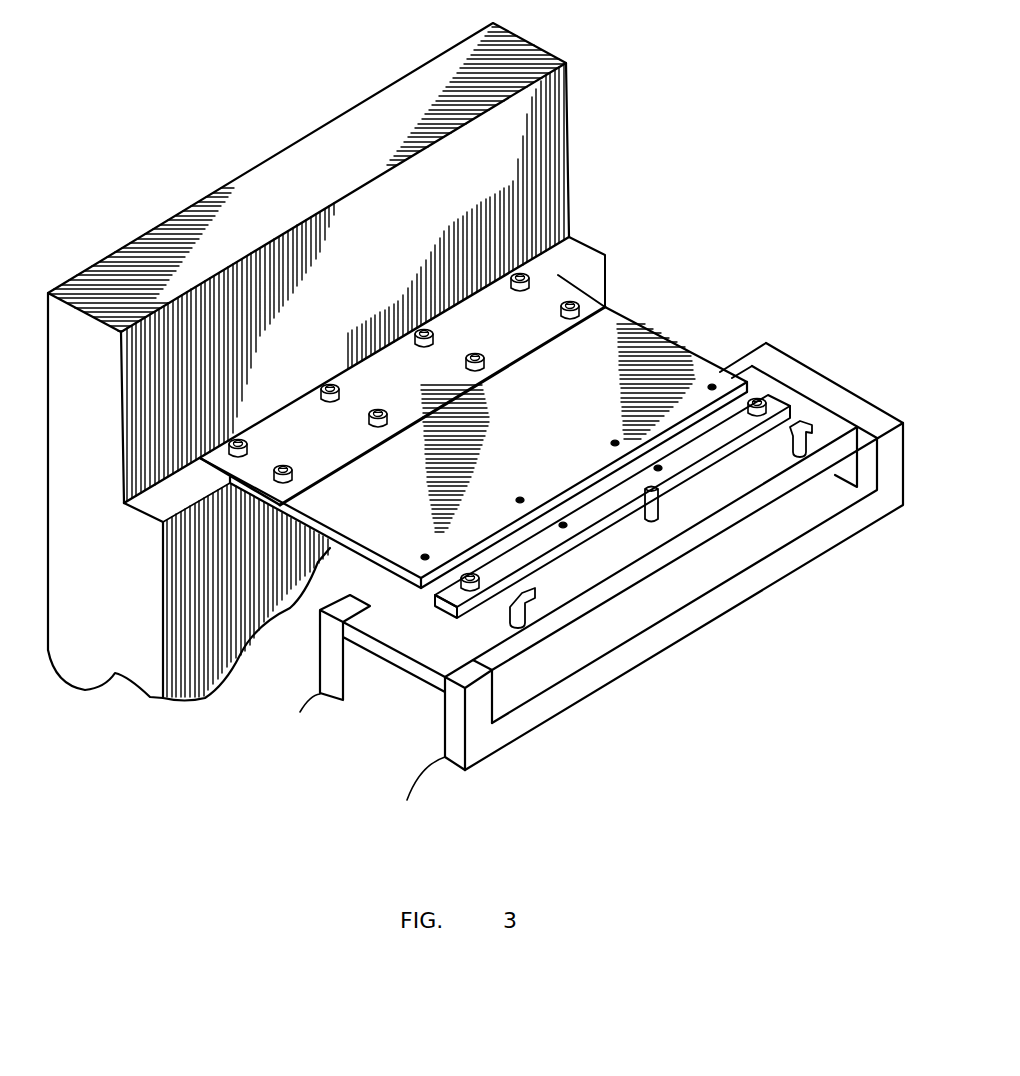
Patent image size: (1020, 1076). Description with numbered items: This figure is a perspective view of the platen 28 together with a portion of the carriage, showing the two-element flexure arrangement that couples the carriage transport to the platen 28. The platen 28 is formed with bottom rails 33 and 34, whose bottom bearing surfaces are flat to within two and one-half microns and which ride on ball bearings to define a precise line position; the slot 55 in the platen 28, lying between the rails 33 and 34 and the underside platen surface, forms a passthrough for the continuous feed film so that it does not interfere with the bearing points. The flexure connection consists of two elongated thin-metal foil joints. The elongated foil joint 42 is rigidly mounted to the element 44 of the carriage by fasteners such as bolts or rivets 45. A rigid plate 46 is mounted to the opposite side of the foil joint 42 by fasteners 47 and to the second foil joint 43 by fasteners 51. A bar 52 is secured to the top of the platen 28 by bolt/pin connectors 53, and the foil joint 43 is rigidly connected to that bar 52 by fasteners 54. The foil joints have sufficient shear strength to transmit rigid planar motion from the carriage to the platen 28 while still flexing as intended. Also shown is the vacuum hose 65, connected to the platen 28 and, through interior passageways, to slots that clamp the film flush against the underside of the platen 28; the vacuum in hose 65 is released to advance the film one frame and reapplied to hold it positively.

The platen 28 is at (866, 407).
The bottom rail 33 is at (443, 767).
The bottom rail 34 is at (323, 703).
The elongated foil joint 42 is at (553, 290).
The foil joint 43 is at (766, 346).
The element of the carriage 44 is at (363, 300).
The fasteners 45 is at (323, 391).
The rigid plate 46 is at (637, 347).
The fasteners 47 is at (379, 426).
The fasteners 51 is at (612, 445).
The bar 52 is at (514, 555).
The bolt/pin connectors 53 is at (764, 393).
The fasteners 54 is at (661, 468).
The slot 55 is at (846, 479).
The vacuum hose 65 is at (845, 417).